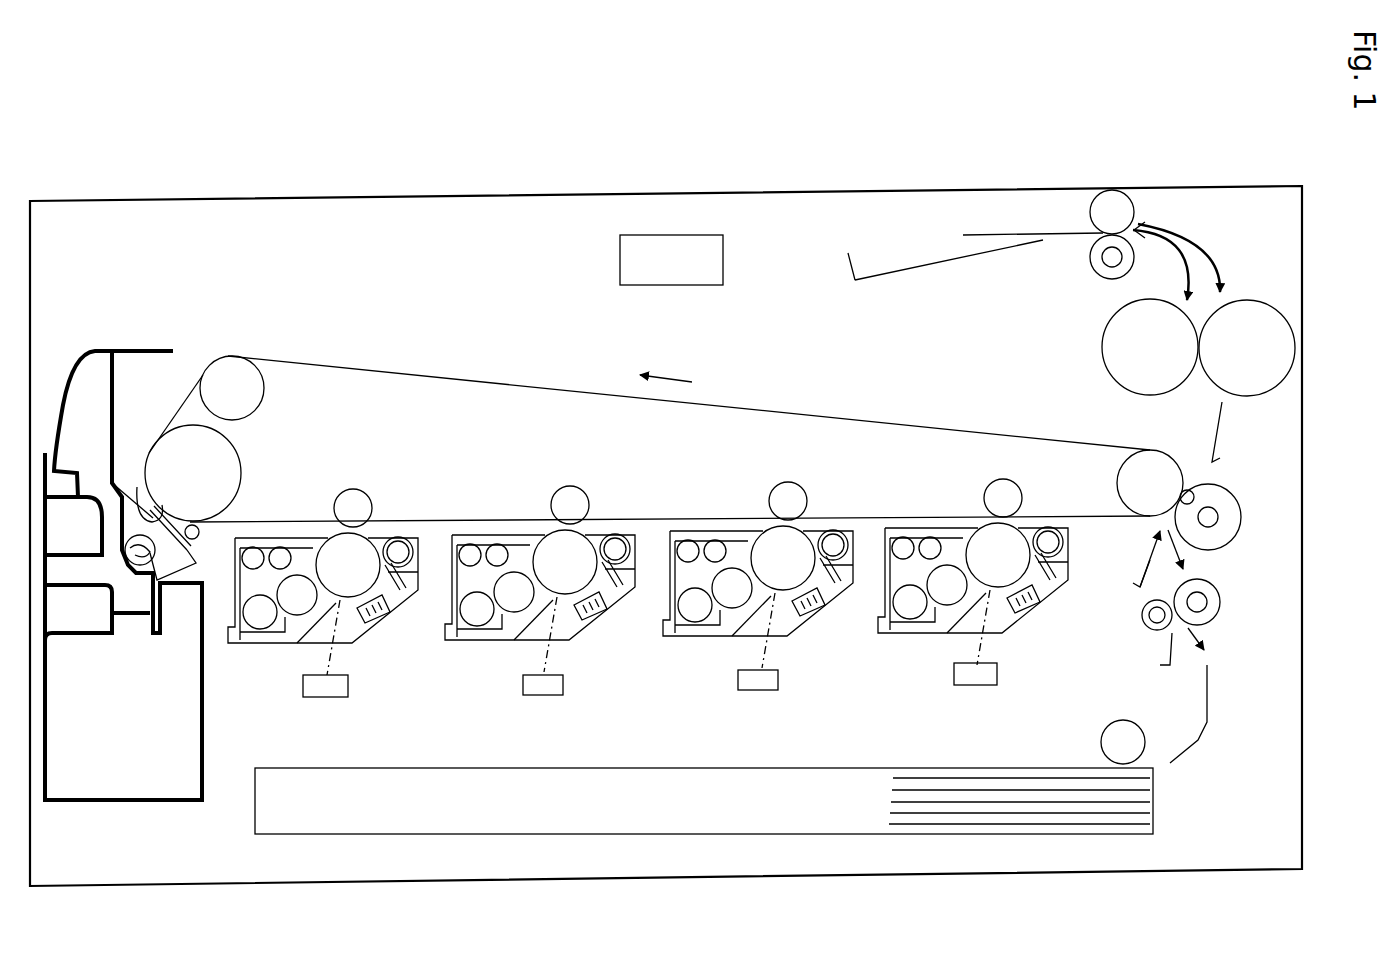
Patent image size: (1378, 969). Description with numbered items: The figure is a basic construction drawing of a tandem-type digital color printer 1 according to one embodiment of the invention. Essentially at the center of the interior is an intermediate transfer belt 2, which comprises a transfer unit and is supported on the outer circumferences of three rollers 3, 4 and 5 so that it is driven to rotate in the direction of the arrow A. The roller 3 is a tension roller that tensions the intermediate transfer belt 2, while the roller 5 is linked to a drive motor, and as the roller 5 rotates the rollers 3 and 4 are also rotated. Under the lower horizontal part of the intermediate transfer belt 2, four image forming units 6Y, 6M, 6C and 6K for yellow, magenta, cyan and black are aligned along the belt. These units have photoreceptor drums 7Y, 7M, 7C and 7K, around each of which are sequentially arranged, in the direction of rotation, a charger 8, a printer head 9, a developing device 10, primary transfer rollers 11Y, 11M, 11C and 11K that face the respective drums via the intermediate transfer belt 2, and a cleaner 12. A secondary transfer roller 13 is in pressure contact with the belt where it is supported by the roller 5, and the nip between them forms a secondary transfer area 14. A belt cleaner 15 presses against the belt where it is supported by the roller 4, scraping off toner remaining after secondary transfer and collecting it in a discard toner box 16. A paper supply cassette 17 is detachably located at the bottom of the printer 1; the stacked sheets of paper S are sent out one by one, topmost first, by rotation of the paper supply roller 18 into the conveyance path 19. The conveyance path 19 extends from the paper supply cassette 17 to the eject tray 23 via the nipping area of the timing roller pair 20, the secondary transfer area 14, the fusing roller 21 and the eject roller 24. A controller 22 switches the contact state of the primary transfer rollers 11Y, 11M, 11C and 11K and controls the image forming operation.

The printer 1 is at (496, 172).
The intermediate transfer belt 2 is at (513, 383).
The tension roller 3 is at (252, 362).
The roller 4 is at (238, 460).
The roller 5 is at (1118, 478).
The image forming unit 6Y is at (331, 594).
The image forming unit 6M is at (544, 590).
The image forming unit 6C is at (759, 587).
The image forming unit 6K is at (976, 578).
The photoreceptor drum 7Y is at (348, 565).
The photoreceptor drum 7M is at (565, 562).
The photoreceptor drum 7C is at (783, 558).
The photoreceptor drum 7K is at (998, 555).
The charger 8 is at (373, 636).
The printer head 9 is at (325, 709).
The developing device 10 is at (271, 666).
The primary transfer roller 11Y is at (372, 486).
The primary transfer roller 11M is at (596, 487).
The primary transfer roller 11C is at (781, 483).
The primary transfer roller 11K is at (995, 482).
The cleaner 12 is at (409, 594).
The secondary transfer roller 13 is at (1240, 495).
The secondary transfer area 14 is at (1189, 489).
The belt cleaner 15 is at (140, 500).
The discard toner box 16 is at (125, 800).
The paper supply cassette 17 is at (1153, 798).
The paper supply roller 18 is at (1101, 745).
The conveyance path 19 is at (1207, 687).
The timing roller pair 20 is at (1230, 600).
The fusing roller 21 is at (1094, 328).
The controller 22 is at (618, 253).
The eject tray 23 is at (905, 262).
The eject roller 24 is at (1079, 266).
The sheets of paper S is at (925, 767).
The arrow A is at (666, 363).